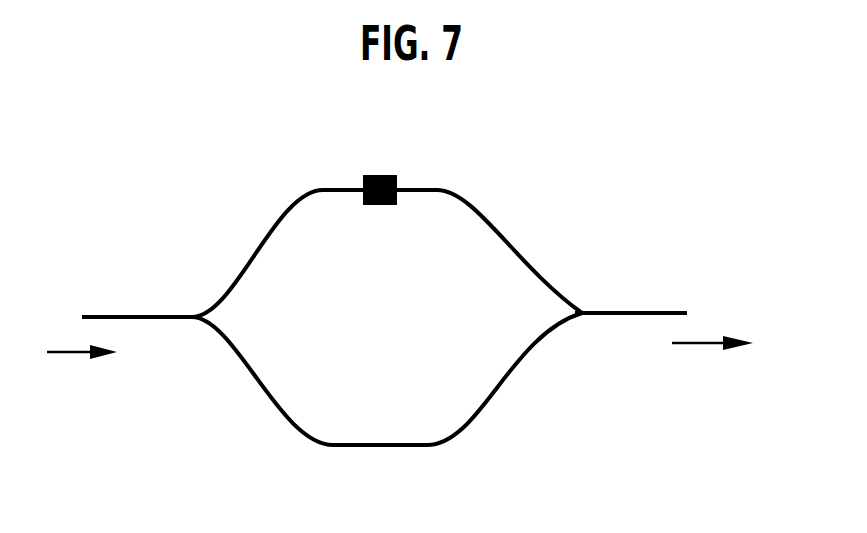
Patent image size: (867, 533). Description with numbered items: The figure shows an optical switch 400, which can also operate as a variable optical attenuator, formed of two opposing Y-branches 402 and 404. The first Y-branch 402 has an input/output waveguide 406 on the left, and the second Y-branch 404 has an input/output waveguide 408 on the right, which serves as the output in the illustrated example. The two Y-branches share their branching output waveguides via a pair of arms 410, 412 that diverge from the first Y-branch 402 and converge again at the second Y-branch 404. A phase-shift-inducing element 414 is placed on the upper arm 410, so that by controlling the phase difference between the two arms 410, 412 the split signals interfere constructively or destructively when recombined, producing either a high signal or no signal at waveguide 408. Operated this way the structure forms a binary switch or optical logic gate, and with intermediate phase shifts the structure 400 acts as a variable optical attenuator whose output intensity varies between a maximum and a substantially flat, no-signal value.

The optical switch 400 is at (232, 187).
The Y-branch 402 is at (187, 338).
The Y-branch 404 is at (563, 290).
The input/output waveguide 406 is at (120, 317).
The input/output waveguide 408 is at (627, 315).
The arm 410 is at (278, 228).
The arm 412 is at (465, 427).
The phase-shift-inducing element 414 is at (390, 173).